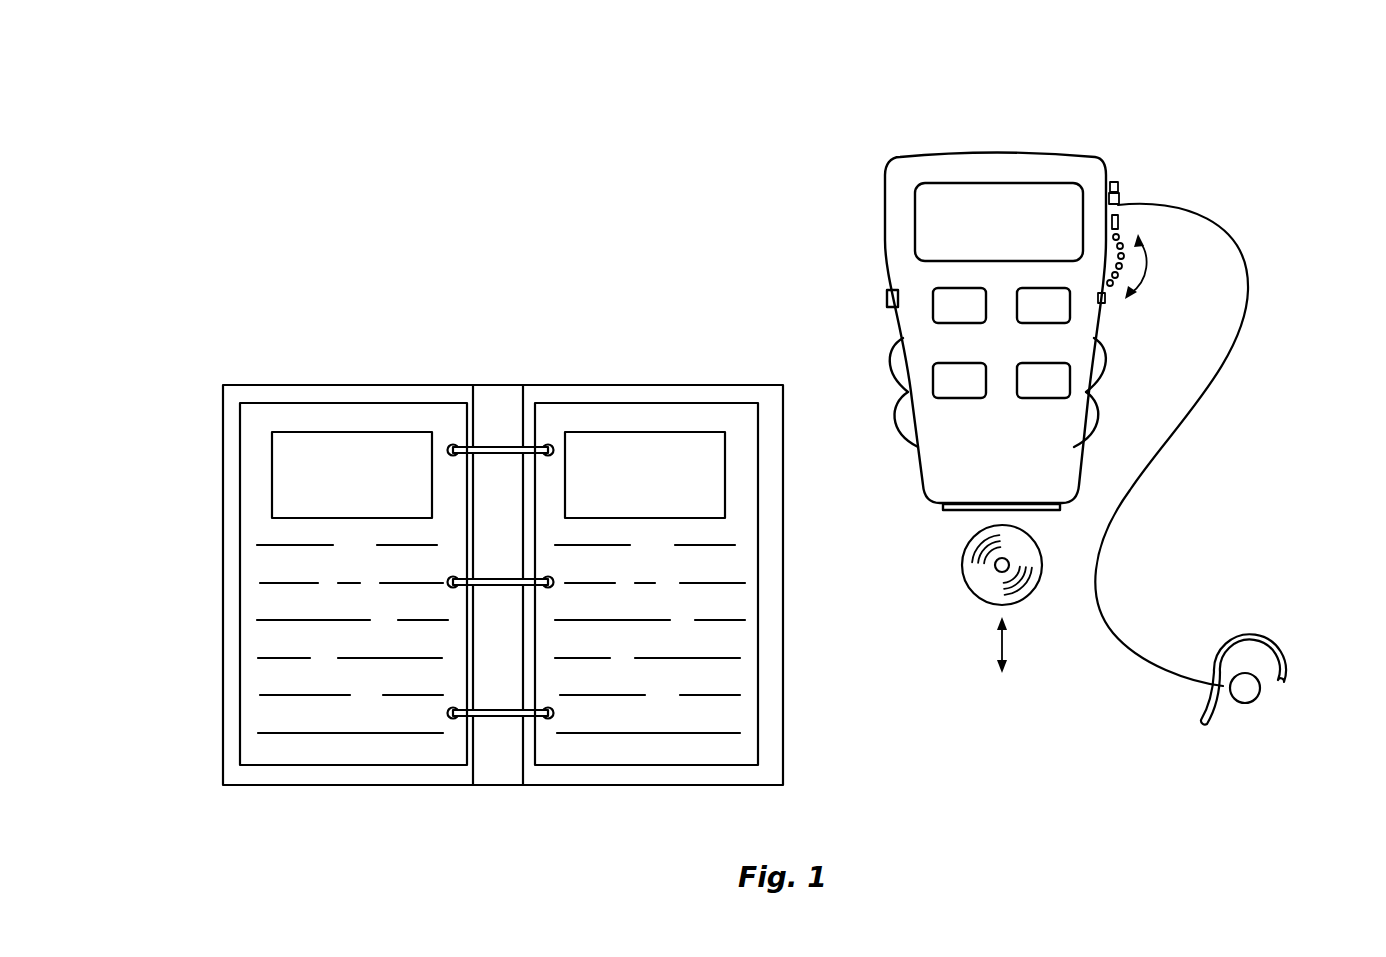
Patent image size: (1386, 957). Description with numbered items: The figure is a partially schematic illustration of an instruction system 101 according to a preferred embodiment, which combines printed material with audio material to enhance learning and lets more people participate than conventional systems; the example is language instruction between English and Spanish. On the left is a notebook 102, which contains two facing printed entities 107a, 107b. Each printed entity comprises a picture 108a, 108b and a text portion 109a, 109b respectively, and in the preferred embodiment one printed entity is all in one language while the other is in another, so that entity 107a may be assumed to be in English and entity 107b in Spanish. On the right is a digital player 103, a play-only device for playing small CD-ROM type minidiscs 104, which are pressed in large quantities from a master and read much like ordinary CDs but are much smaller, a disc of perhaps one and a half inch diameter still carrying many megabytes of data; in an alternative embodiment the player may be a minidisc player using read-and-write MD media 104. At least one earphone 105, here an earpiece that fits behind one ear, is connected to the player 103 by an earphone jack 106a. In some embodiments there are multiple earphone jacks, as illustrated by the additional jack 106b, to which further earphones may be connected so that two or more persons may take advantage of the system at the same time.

The instruction system 101 is at (322, 124).
The notebook 102 is at (283, 352).
The digital player 103 is at (978, 150).
The minidiscs 104 is at (965, 578).
The earphone 105 is at (1283, 616).
The earphone jack 106a is at (1113, 183).
The earphone jack 106b is at (1118, 200).
The printed entity 107a is at (268, 605).
The printed entity 107b is at (748, 683).
The picture 108a is at (283, 473).
The picture 108b is at (707, 473).
The text portion 109a is at (258, 713).
The text portion 109b is at (748, 605).